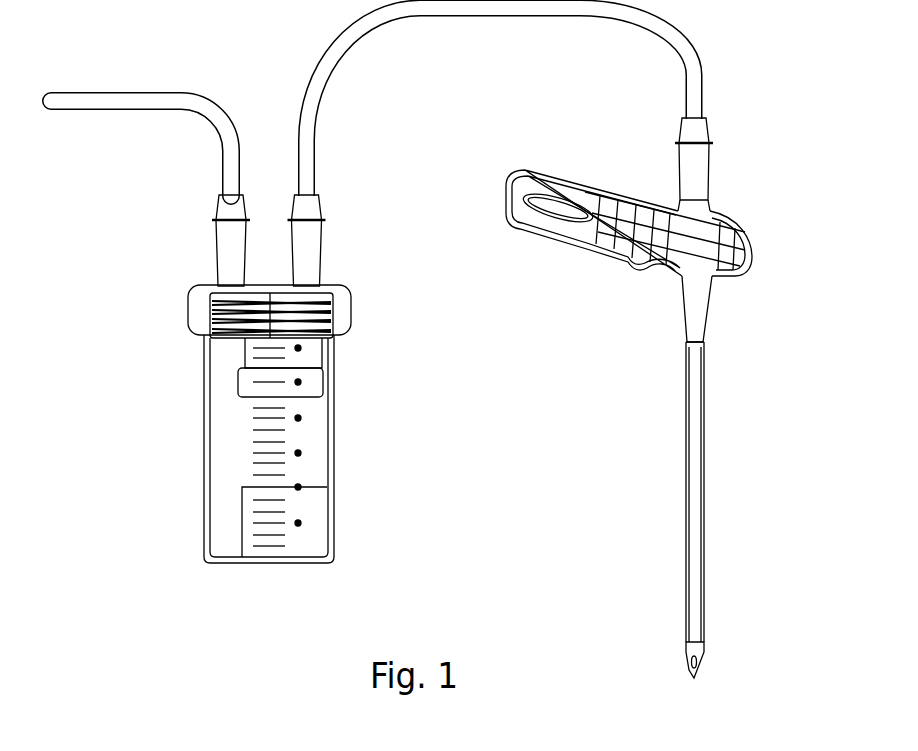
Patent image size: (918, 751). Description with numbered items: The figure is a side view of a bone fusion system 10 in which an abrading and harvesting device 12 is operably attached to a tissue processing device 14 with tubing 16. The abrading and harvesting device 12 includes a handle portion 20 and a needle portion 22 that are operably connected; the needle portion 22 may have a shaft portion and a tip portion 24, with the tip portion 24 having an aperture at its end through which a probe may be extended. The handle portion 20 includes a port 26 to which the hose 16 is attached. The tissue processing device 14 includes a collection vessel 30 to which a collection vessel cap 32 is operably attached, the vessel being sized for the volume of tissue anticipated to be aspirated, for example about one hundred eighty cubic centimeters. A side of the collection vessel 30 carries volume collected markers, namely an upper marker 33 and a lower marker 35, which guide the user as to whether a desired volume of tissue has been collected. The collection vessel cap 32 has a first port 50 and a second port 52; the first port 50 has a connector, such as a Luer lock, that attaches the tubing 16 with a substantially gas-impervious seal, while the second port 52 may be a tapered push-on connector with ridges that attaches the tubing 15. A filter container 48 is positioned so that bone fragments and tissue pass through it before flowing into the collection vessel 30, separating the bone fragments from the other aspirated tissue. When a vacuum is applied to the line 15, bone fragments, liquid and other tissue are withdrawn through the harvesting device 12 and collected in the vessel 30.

The bone fusion system 10 is at (436, 372).
The abrading and harvesting device 12 is at (656, 429).
The tissue processing device 14 is at (261, 297).
The tubing 15 is at (80, 97).
The tubing 16 is at (352, 41).
The handle portion 20 is at (553, 232).
The needle portion 22 is at (734, 508).
The tip portion 24 is at (697, 662).
The port 26 is at (699, 208).
The collection vessel 30 is at (258, 453).
The collection vessel cap 32 is at (203, 307).
The upper marker 33 is at (293, 487).
The lower marker 35 is at (240, 522).
The filter container 48 is at (310, 360).
The first port 50 is at (317, 277).
The second port 52 is at (233, 277).